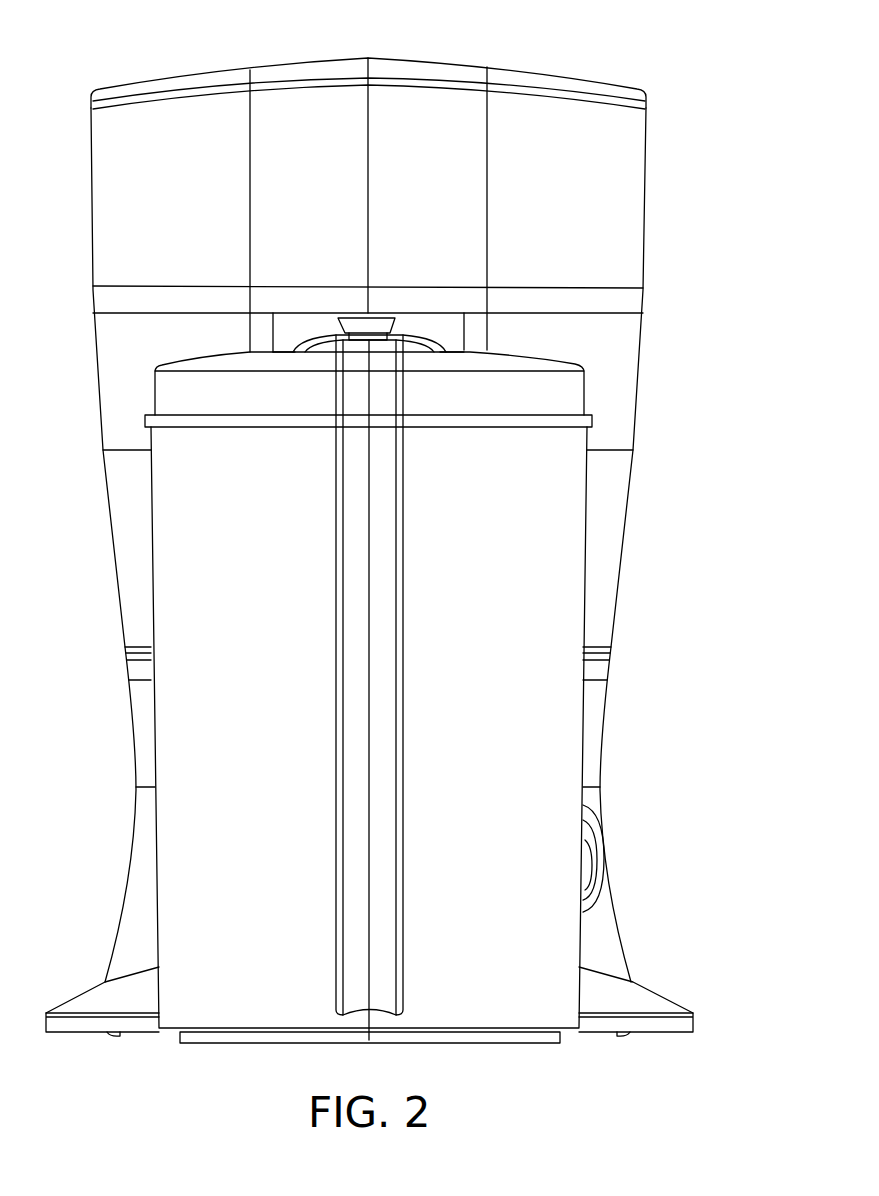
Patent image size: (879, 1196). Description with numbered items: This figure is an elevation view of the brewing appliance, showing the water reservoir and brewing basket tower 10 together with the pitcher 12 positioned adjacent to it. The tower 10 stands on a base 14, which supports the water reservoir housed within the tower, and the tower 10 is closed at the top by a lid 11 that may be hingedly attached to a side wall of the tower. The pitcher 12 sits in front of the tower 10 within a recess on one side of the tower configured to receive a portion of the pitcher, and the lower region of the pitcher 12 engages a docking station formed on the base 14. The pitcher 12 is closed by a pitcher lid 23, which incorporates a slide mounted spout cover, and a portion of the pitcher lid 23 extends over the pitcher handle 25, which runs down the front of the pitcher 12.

The water reservoir and brewing basket tower 10 is at (638, 412).
The lid 11 is at (525, 78).
The pitcher 12 is at (540, 988).
The base 14 is at (140, 838).
The pitcher lid 23 is at (505, 352).
The pitcher handle 25 is at (382, 558).